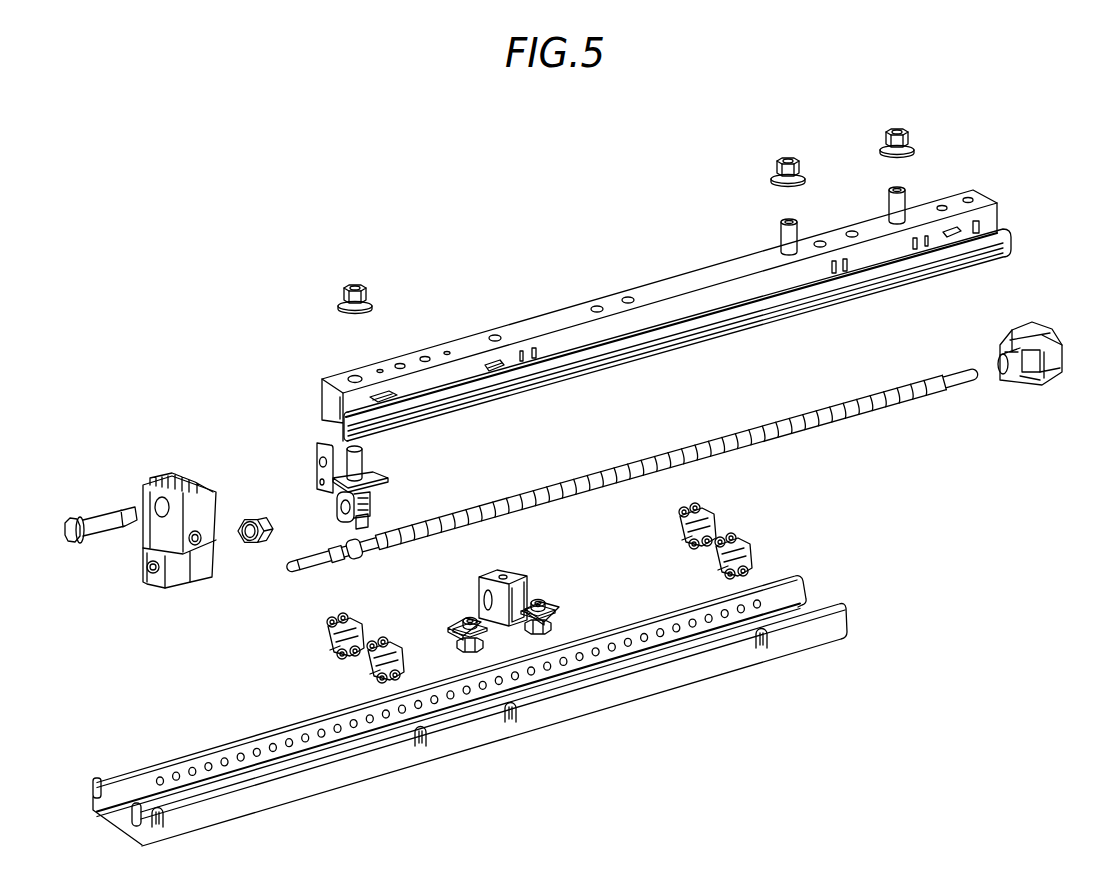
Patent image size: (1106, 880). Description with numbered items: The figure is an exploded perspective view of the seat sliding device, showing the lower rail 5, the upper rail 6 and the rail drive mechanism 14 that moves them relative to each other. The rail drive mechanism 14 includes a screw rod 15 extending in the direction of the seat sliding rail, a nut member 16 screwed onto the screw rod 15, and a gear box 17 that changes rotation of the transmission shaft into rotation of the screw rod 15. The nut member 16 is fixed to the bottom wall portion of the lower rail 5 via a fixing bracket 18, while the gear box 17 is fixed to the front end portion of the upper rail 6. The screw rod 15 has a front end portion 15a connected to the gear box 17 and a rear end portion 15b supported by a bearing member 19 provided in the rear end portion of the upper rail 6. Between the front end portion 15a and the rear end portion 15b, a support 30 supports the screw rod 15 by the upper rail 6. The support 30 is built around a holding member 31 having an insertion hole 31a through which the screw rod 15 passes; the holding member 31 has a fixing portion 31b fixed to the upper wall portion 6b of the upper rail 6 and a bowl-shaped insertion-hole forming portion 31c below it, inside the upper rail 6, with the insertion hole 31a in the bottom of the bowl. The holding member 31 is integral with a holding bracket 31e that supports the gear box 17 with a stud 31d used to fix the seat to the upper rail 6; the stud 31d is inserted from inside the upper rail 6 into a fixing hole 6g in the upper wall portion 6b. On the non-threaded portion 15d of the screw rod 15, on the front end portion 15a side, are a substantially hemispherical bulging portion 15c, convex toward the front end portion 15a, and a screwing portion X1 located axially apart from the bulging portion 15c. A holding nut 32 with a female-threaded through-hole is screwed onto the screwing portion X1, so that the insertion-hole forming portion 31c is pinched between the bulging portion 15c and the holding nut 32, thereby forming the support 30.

The lower rail 5 is at (693, 685).
The upper rail 6 is at (666, 314).
The upper wall portion 6b is at (659, 314).
The fixing hole 6g is at (355, 375).
The rail drive mechanism 14 is at (563, 487).
The screw rod 15 is at (629, 493).
The front end portion 15a is at (293, 566).
The rear end portion 15b is at (960, 378).
The bulging portion 15c is at (354, 549).
The non-threaded portion 15d is at (314, 560).
The nut member 16 is at (512, 609).
The gear box 17 is at (192, 478).
The fixing bracket 18 is at (506, 575).
The bearing member 19 is at (1028, 381).
The support 30 is at (360, 478).
The holding member 31 is at (345, 474).
The insertion hole 31a is at (342, 501).
The fixing portion 31b is at (377, 473).
The insertion-hole forming portion 31c is at (342, 512).
The stud 31d is at (343, 452).
The holding bracket 31e is at (320, 462).
The holding nut 32 is at (254, 514).
The screwing portion X1 is at (336, 554).